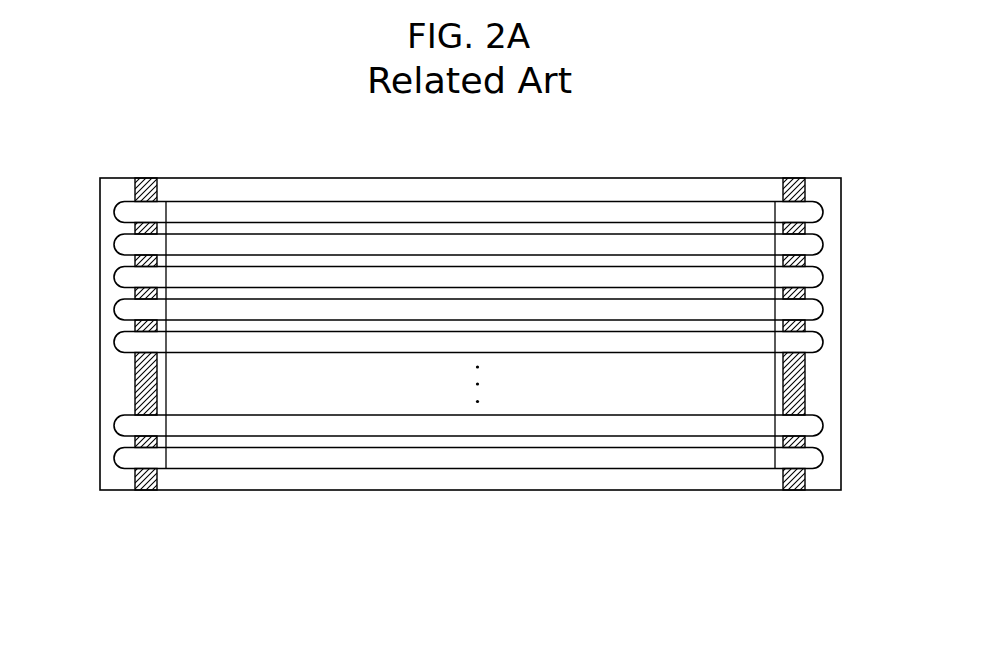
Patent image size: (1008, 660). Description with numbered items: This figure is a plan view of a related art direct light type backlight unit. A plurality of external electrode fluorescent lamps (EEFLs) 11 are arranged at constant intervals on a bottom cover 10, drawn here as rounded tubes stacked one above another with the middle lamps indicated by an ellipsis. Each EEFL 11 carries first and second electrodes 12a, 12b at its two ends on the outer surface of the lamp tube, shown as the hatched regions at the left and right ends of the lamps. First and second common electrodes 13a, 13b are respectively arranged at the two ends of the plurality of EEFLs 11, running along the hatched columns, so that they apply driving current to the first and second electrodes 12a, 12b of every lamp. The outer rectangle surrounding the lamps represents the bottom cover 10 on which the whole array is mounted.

The bottom cover 10 is at (556, 178).
The external electrode fluorescent lamp 11 is at (474, 202).
The first electrode 12a is at (133, 205).
The second electrode 12b is at (808, 208).
The first common electrode 13a is at (137, 381).
The second common electrode 13b is at (801, 384).